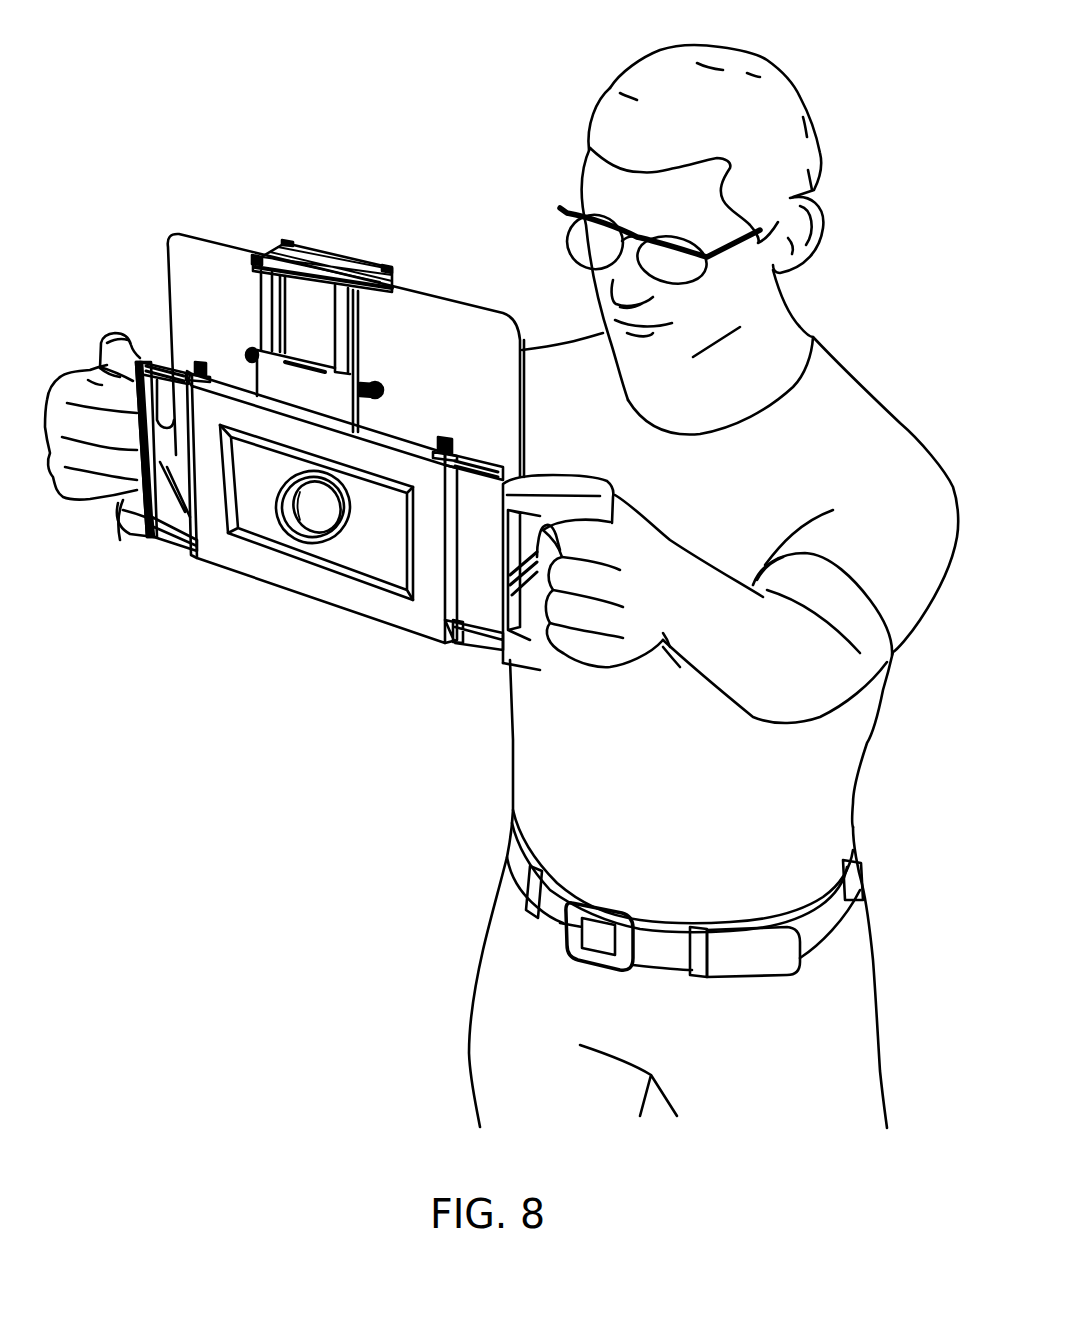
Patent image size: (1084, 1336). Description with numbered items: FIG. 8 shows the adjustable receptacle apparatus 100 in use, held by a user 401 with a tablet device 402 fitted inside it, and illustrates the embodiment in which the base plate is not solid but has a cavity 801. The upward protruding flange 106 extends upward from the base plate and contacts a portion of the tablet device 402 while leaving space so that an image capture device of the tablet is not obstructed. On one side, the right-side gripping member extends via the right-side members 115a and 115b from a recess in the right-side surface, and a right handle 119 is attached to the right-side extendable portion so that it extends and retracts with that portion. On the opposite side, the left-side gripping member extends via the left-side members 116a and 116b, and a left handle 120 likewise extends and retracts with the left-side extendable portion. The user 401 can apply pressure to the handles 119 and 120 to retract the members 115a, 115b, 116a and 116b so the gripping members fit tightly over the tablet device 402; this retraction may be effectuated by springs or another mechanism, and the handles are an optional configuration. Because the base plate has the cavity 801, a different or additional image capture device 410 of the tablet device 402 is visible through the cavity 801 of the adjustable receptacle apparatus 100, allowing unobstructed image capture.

The adjustable receptacle apparatus 100 is at (343, 504).
The upward protruding flange 106 is at (323, 410).
The right-side member 115a is at (183, 377).
The right-side member 115b is at (180, 537).
The left-side member 116a is at (477, 477).
The left-side member 116b is at (485, 640).
The right handle 119 is at (123, 520).
The left handle 120 is at (548, 663).
The user 401 is at (853, 403).
The tablet device 402 is at (440, 330).
The image capture device 410 is at (310, 512).
The cavity 801 is at (260, 520).